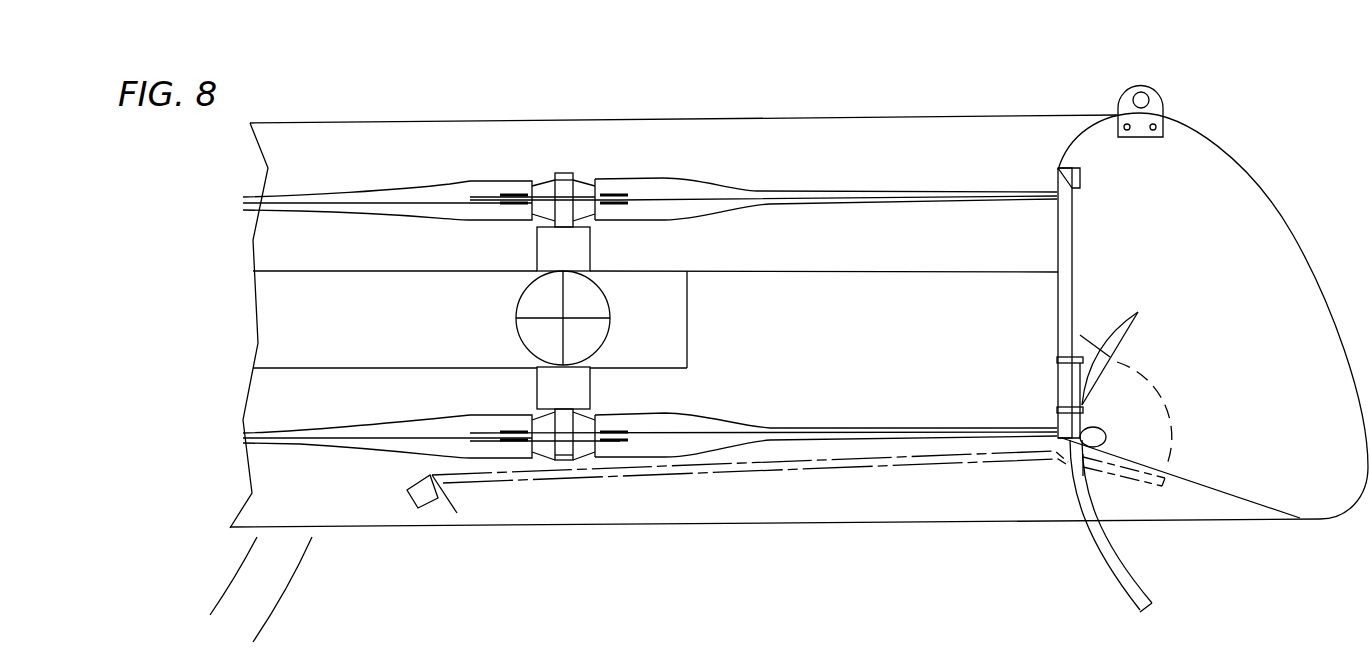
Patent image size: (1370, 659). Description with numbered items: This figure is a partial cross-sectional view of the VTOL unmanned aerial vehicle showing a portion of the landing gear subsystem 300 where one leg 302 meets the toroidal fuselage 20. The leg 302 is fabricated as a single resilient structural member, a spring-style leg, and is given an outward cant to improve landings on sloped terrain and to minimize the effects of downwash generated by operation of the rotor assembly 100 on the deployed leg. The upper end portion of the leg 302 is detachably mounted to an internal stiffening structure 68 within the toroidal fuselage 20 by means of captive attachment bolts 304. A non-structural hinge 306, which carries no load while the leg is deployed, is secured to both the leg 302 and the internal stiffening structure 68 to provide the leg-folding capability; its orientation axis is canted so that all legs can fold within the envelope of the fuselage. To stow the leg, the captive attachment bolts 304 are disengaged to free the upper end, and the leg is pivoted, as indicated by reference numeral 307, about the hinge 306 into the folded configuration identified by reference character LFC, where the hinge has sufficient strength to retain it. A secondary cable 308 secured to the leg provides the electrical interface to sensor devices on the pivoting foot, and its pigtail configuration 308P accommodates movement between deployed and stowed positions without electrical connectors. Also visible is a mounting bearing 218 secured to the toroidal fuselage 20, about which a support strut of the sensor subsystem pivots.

The toroidal fuselage 20 is at (1218, 152).
The internal stiffening structure 68 is at (1072, 228).
The rotor assembly 100 is at (581, 166).
The mounting bearing 218 is at (1163, 107).
The leg 302 is at (258, 585).
The captive attachment bolt 304 is at (1133, 350).
The non-structural hinge 306 is at (1067, 463).
The pivoting of the leg 307 is at (1140, 370).
The secondary cable 308 is at (1133, 583).
The pigtail configuration 308P is at (1103, 437).
The leg folded configuration LFC is at (638, 494).
The landing gear subsystem 300 is at (723, 658).